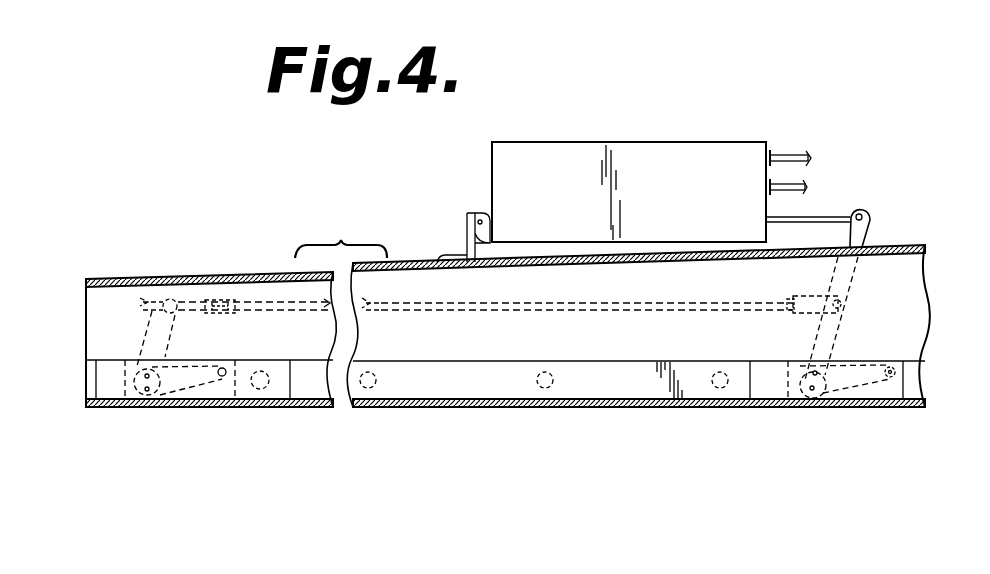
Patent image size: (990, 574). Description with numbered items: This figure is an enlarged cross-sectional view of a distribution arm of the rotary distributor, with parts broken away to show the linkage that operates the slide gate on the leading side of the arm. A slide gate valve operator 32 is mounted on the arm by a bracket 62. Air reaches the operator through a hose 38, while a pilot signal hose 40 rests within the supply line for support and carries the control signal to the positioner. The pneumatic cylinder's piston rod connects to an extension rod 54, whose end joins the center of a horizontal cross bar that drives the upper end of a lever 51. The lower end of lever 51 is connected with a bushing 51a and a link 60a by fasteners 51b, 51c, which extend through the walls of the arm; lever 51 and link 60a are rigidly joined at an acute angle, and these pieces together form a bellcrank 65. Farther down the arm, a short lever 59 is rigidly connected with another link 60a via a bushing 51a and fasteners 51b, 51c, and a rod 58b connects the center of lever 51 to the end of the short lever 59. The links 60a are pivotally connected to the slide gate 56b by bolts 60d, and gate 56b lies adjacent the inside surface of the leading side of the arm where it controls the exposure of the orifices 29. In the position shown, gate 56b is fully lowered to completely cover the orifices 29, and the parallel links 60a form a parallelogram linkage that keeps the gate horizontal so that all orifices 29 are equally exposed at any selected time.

The orifices 29 is at (536, 380).
The slide gate valve operator 32 is at (768, 142).
The hose 38 is at (805, 156).
The hose 40 is at (784, 192).
The lever 51 is at (868, 233).
The bushing 51a is at (152, 396).
The fastener 51b is at (811, 391).
The fastener 51c is at (813, 372).
The extension rod 54 is at (857, 211).
The slide gate 56b is at (470, 367).
The rod 58b is at (647, 310).
The short lever 59 is at (145, 333).
The link 60a is at (205, 393).
The bolt 60d is at (223, 367).
The bracket 62 is at (463, 253).
The bellcrank 65 is at (852, 296).